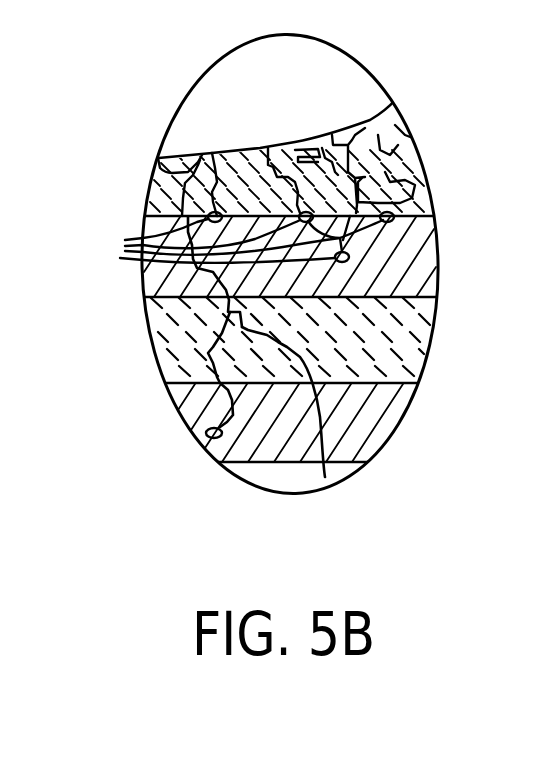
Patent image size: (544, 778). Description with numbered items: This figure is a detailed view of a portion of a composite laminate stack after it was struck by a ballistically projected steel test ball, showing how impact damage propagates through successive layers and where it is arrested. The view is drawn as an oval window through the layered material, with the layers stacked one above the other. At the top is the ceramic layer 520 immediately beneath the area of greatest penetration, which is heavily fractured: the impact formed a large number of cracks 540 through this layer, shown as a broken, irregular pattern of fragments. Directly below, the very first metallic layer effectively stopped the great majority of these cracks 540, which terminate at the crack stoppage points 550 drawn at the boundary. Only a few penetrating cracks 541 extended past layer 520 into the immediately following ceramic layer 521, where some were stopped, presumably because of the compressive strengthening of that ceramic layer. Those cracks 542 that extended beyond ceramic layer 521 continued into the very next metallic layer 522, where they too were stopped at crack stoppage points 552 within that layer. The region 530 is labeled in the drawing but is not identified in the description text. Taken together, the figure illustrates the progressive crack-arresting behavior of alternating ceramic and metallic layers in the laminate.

The ceramic layer 520 is at (439, 233).
The ceramic layer 521 is at (440, 301).
The metallic layer 522 is at (367, 430).
The upper cracked surface layer 530 is at (152, 196).
The cracks 540 is at (212, 192).
The penetrating cracks 541 is at (325, 477).
The cracks extending beyond ceramic layer 521 542 is at (210, 353).
The crack stoppage points 550 is at (227, 237).
The crack stoppage points 552 is at (150, 291).